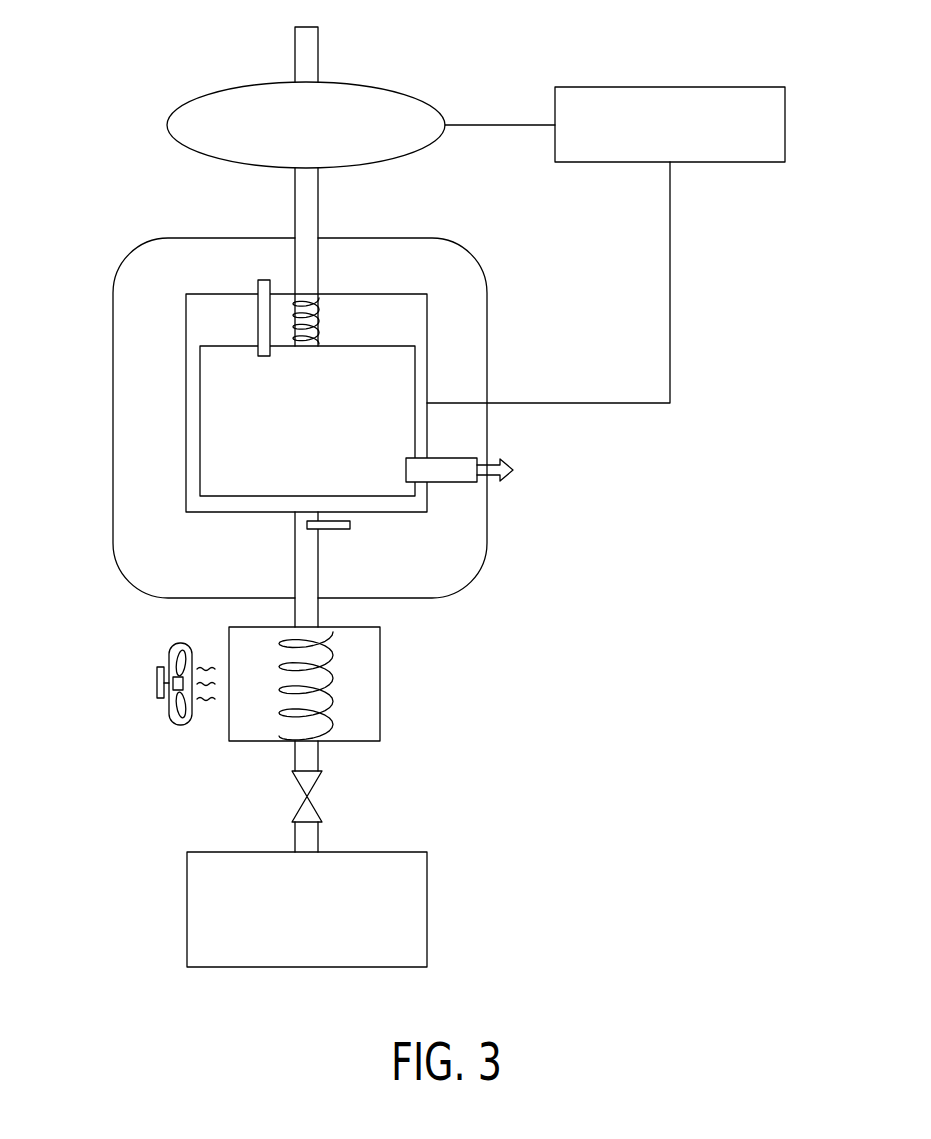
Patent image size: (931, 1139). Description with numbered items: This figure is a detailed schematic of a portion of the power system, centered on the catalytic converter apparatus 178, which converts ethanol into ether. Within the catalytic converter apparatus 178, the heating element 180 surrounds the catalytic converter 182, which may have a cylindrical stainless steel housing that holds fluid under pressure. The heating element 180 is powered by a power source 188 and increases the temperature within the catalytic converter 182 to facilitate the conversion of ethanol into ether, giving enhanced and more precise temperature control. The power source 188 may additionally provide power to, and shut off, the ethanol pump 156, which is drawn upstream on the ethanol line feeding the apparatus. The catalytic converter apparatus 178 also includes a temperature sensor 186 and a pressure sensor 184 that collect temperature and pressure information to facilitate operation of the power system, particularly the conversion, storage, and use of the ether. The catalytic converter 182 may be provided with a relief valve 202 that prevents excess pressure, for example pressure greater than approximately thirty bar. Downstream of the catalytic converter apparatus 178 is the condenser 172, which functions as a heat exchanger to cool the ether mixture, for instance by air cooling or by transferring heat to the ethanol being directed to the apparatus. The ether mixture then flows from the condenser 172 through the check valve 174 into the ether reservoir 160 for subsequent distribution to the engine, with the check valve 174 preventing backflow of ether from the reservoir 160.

The ethanol pump 156 is at (238, 83).
The power source 188 is at (670, 87).
The catalytic converter apparatus 178 is at (113, 320).
The heating element 180 is at (186, 362).
The catalytic converter 182 is at (200, 420).
The temperature sensor 186 is at (265, 280).
The pressure sensor 184 is at (338, 529).
The relief valve 202 is at (452, 482).
The condenser 172 is at (380, 683).
The check valve 174 is at (303, 790).
The ether reservoir 160 is at (427, 907).